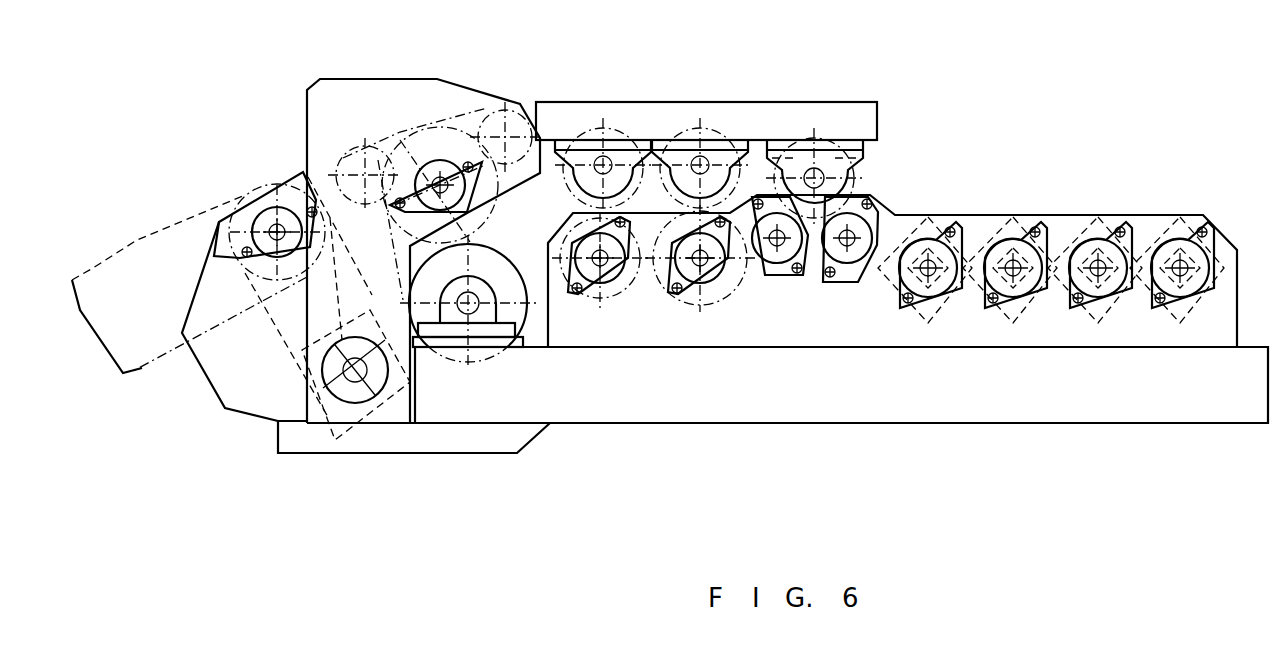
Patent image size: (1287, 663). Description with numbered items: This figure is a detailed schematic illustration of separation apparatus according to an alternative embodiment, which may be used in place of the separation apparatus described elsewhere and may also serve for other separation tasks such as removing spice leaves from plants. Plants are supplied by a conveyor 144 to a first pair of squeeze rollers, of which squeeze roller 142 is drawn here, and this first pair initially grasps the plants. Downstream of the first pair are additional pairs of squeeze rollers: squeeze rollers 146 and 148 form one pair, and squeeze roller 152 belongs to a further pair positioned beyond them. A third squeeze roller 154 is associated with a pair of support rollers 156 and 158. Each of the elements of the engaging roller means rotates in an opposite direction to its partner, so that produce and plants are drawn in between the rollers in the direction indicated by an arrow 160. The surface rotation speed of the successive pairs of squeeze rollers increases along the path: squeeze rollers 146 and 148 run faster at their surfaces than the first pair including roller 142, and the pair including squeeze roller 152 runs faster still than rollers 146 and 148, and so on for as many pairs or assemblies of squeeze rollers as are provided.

The squeeze roller 142 is at (500, 263).
The conveyor 144 is at (158, 243).
The squeeze roller 146 is at (615, 133).
The squeeze roller 148 is at (420, 152).
The squeeze roller 152 is at (700, 274).
The third squeeze roller 154 is at (830, 137).
The support roller 156 is at (780, 255).
The support roller 158 is at (715, 130).
The arrow 160 is at (925, 179).